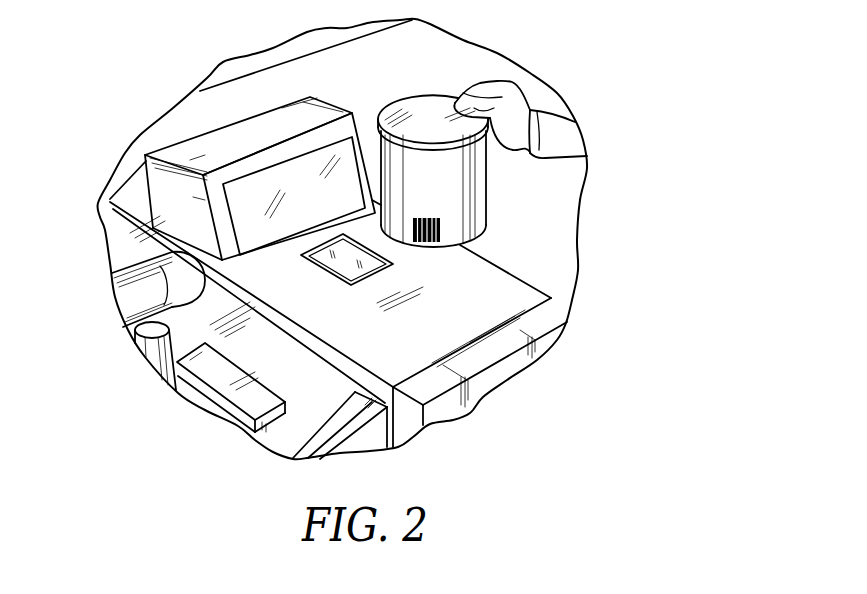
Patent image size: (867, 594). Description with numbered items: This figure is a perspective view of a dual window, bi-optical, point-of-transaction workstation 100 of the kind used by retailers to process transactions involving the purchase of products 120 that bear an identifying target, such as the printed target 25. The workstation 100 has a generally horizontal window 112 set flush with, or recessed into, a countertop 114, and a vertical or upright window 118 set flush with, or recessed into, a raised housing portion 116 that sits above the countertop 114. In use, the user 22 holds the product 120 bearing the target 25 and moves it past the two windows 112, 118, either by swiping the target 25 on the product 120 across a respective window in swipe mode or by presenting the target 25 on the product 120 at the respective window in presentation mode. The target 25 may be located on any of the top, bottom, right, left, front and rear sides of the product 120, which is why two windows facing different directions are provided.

The point-of-transaction workstation 100 is at (558, 308).
The countertop 114 is at (502, 283).
The raised housing portion 116 is at (157, 173).
The vertical window 118 is at (287, 180).
The horizontal window 112 is at (344, 270).
The product 120 is at (434, 107).
The printed target 25 is at (440, 230).
The user 22 is at (572, 128).